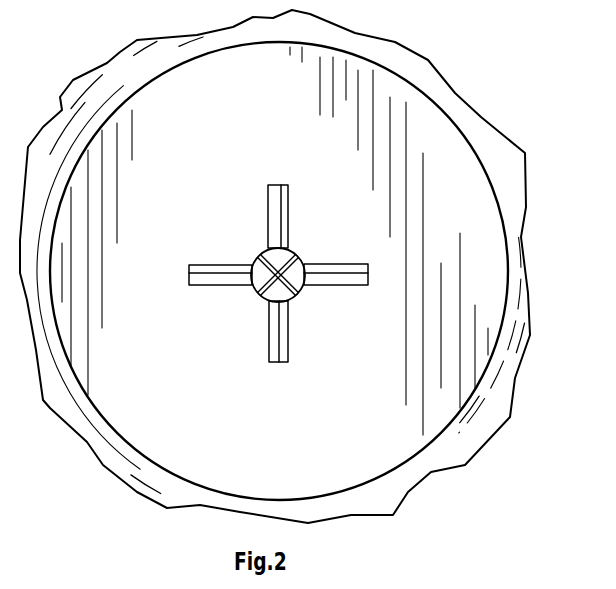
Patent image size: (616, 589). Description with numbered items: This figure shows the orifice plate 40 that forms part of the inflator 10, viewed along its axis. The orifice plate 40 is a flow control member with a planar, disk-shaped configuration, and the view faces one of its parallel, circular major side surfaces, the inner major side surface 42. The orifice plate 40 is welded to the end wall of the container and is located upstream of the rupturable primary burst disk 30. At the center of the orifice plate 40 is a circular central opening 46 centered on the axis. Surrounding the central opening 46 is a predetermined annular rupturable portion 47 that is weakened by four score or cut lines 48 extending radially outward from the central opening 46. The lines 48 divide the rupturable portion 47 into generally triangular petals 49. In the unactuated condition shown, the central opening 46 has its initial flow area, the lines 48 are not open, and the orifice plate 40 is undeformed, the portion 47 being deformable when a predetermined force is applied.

The inflator 10 is at (503, 95).
The orifice plate 40 is at (489, 156).
The inner major side surface 42 is at (476, 280).
The primary burst disk 30 is at (264, 273).
The central opening 46 is at (288, 297).
The rupturable portion 47 is at (241, 172).
The score or cut lines 48 is at (283, 187).
The petals 49 is at (241, 239).